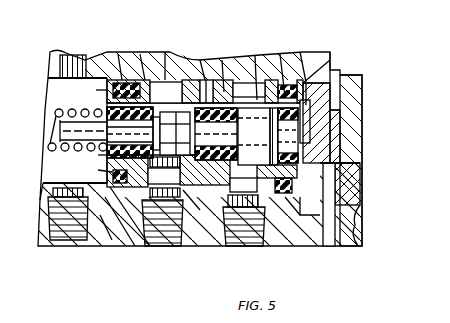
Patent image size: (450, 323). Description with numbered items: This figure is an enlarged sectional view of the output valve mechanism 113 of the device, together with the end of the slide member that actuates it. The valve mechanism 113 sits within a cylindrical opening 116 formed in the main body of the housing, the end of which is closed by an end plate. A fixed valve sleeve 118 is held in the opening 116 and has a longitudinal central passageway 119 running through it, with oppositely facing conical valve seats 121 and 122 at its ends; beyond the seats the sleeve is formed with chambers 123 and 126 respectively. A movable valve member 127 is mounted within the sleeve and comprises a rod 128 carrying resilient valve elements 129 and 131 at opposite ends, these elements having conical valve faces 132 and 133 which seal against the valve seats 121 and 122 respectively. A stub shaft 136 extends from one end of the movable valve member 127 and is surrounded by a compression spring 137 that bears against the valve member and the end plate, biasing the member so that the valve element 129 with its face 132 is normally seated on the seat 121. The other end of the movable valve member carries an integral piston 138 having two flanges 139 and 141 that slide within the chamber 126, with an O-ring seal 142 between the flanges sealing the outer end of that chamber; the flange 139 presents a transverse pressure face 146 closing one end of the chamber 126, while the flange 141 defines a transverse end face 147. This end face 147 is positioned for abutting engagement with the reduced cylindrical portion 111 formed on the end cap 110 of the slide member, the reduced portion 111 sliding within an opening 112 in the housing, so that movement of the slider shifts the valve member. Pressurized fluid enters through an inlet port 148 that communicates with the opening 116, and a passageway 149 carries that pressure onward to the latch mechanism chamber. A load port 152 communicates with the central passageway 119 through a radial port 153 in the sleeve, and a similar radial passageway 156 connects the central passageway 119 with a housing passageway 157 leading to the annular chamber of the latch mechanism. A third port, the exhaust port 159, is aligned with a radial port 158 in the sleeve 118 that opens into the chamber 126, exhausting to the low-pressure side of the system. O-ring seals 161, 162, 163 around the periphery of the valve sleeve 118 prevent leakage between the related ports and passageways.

The end cap 110 is at (360, 75).
The reduced cylindrical portion 111 is at (336, 95).
The opening 112 is at (360, 163).
The output valve mechanism 113 is at (106, 228).
The cylindrical opening 116 is at (48, 200).
The fixed valve sleeve 118 is at (224, 92).
The central passageway 119 is at (137, 185).
The conical valve seat 121 is at (130, 132).
The conical valve seat 122 is at (216, 134).
The chamber 123 is at (106, 94).
The chamber 126 is at (266, 186).
The movable valve member 127 is at (112, 170).
The rod 128 is at (164, 176).
The resilient valve element 129 is at (106, 156).
The resilient valve element 131 is at (254, 153).
The conical valve face 132 is at (166, 92).
The conical valve face 133 is at (184, 196).
The stub shaft 136 is at (104, 112).
The compression spring 137 is at (48, 146).
The integral piston 138 is at (258, 100).
The flange 139 is at (264, 144).
The flange 141 is at (306, 105).
The O-ring seal 142 is at (306, 82).
The transverse pressure face 146 is at (334, 142).
The transverse end face 147 is at (306, 212).
The inlet port 148 is at (76, 250).
The passageway 149 is at (74, 68).
The load port 152 is at (150, 250).
The radial port 153 is at (116, 246).
The radial passageway 156 is at (146, 80).
The housing passageway 157 is at (166, 56).
The radial port 158 is at (280, 246).
The exhaust port 159 is at (242, 250).
The O-ring seal 161 is at (122, 80).
The O-ring seal 162 is at (205, 80).
The O-ring seal 163 is at (287, 97).